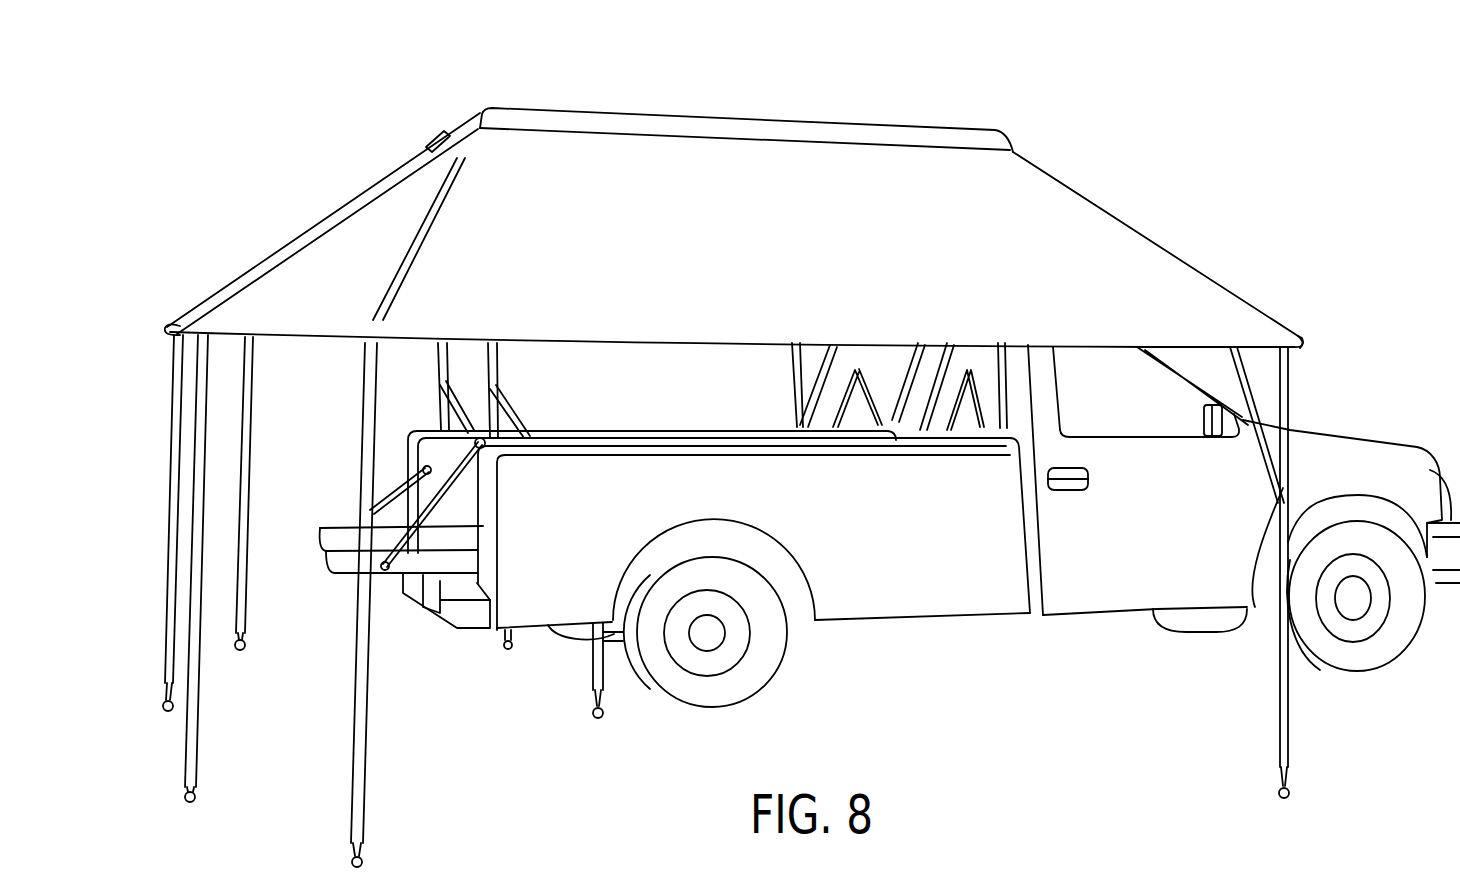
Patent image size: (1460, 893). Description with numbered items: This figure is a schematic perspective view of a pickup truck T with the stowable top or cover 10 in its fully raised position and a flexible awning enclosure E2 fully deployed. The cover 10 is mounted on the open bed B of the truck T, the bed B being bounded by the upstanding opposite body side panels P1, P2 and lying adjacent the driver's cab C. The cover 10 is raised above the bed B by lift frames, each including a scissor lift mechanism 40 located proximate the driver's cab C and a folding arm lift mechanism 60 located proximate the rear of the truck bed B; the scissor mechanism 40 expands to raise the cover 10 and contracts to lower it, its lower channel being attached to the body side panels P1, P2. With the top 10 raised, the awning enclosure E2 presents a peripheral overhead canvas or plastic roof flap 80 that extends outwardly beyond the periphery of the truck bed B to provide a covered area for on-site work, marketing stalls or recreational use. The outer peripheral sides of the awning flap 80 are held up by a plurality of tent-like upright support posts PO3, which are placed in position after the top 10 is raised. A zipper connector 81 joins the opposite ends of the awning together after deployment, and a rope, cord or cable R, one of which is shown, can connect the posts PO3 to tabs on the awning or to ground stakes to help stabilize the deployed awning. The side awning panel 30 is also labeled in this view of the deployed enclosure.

The stowable top or cover 10 is at (633, 118).
The flexible awning enclosure E2 is at (752, 158).
The side canopy panel 30 is at (1070, 181).
The zipper connector 81 is at (310, 237).
The roof flap 80 is at (1090, 297).
The folding arm lift mechanism 60 is at (450, 363).
The scissor lift mechanism 40 is at (932, 363).
The truck bed B is at (629, 438).
The body side panel P1 is at (716, 430).
The body side panel P2 is at (570, 470).
The driver's cab C is at (1118, 363).
The rope, cord or cable R is at (1250, 389).
The truck T is at (1402, 436).
The upright support posts PO3 is at (352, 740).